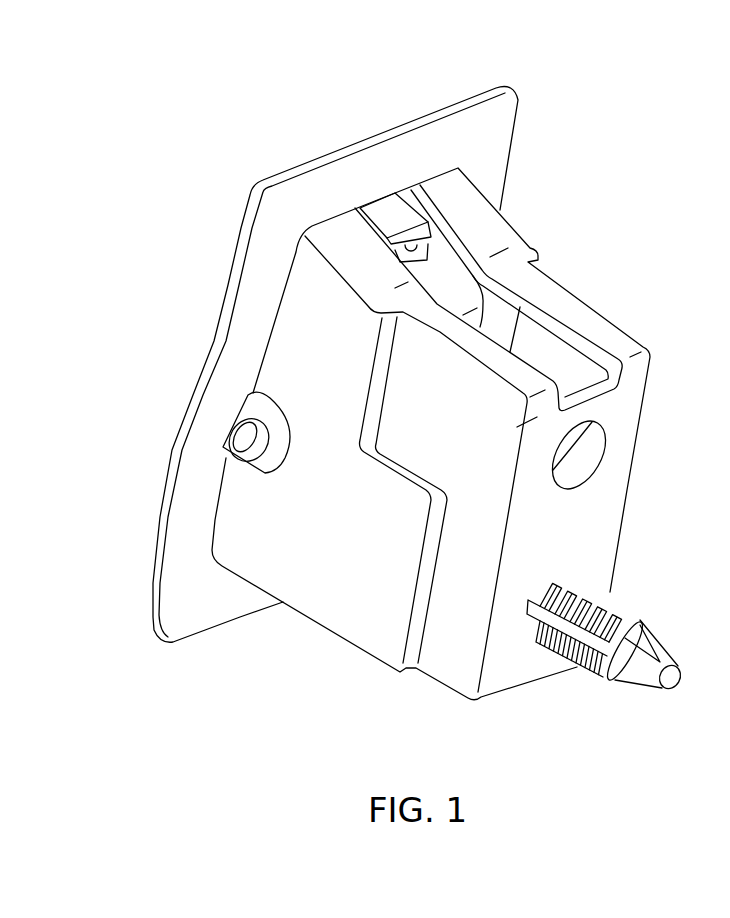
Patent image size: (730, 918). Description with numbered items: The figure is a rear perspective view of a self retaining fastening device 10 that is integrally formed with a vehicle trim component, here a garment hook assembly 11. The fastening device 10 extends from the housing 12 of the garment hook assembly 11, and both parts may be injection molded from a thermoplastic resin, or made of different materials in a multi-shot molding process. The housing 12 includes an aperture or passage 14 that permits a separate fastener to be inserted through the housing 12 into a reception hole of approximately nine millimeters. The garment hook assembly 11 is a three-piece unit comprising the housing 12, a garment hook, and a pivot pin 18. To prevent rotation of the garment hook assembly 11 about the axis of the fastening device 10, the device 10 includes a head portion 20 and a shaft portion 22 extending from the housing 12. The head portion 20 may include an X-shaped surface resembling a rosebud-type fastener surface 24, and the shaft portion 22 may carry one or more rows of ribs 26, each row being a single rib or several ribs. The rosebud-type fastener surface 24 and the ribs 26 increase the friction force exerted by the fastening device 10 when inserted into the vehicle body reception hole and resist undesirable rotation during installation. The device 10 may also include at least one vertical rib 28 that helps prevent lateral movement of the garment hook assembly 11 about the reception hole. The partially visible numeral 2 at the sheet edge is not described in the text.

The self retaining fastening device 10 is at (451, 469).
The garment hook assembly 11 is at (568, 95).
The housing 12 is at (440, 434).
The aperture or passage 14 is at (583, 467).
The pivot pin 18 is at (244, 440).
The head portion 20 is at (599, 658).
The shaft portion 22 is at (570, 658).
The rosebud-type fastener surface 24 is at (663, 690).
The row of ribs 26 is at (626, 600).
The vertical rib 28 is at (545, 619).
The cropped numeral 2 is at (725, 225).